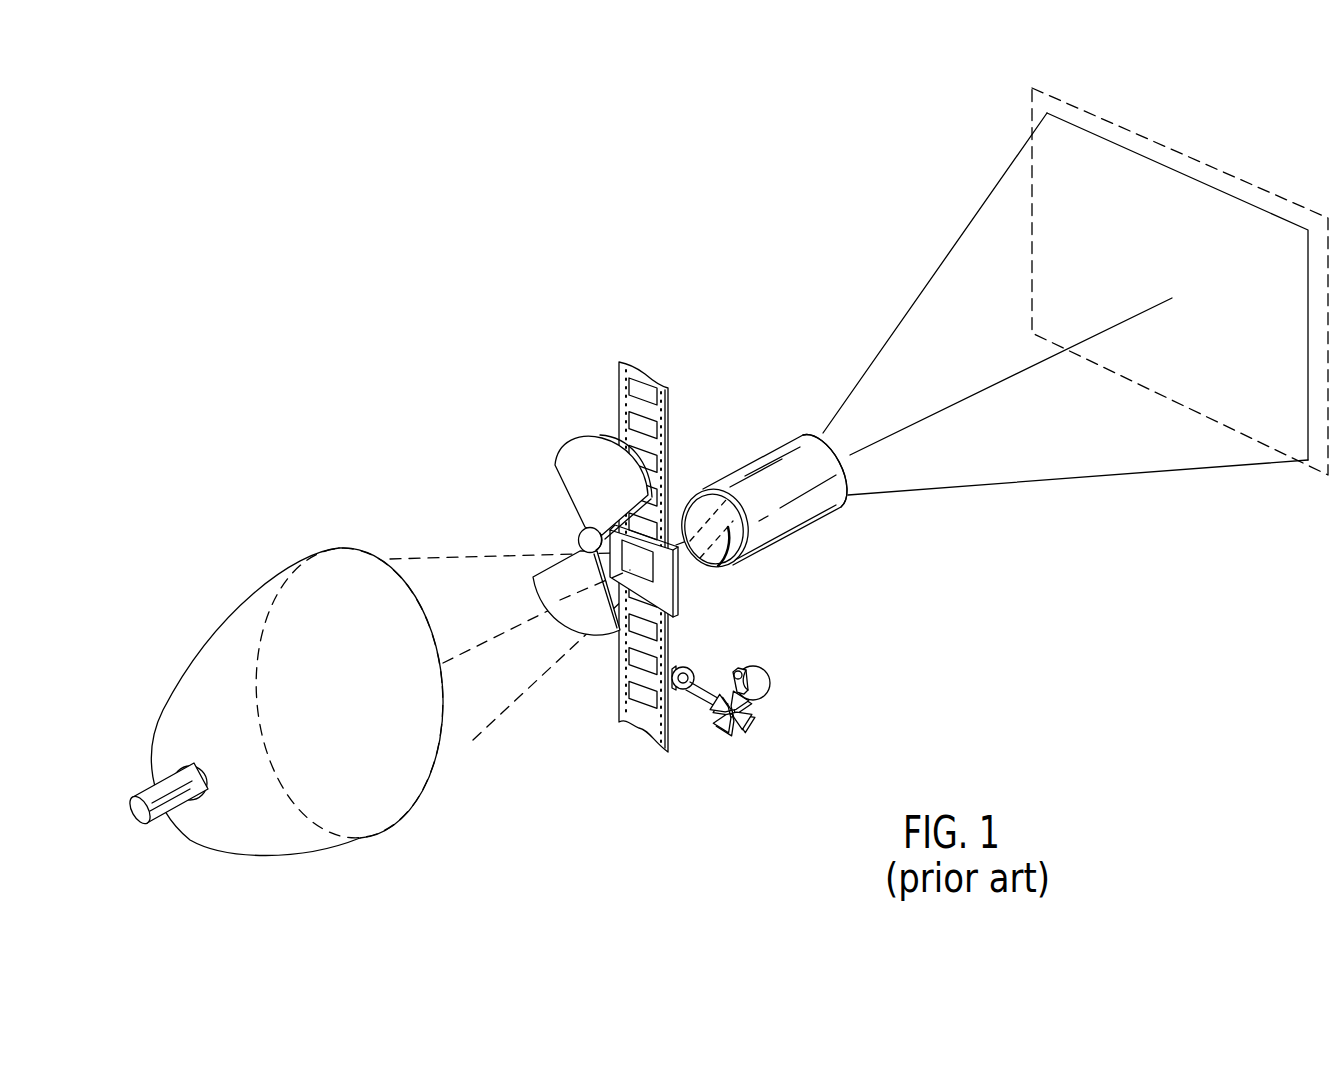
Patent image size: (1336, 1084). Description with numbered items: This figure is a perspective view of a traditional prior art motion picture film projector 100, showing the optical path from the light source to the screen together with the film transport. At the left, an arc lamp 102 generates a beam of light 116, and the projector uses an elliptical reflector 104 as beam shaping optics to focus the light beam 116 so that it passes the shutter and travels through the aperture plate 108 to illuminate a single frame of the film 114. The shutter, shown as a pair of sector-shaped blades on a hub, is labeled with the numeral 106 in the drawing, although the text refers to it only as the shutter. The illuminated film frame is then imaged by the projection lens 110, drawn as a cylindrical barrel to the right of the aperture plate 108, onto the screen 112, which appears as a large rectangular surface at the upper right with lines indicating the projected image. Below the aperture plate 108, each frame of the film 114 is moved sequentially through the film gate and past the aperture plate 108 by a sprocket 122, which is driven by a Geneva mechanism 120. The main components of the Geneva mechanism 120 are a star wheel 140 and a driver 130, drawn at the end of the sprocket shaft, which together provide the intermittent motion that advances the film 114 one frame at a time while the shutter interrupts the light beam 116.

The motion picture film projector 100 is at (402, 352).
The arc lamp 102 is at (156, 828).
The elliptical reflector 104 is at (401, 812).
The shutter 106 is at (568, 566).
The aperture plate 108 is at (680, 609).
The projection lens 110 is at (787, 447).
The screen 112 is at (1197, 160).
The film 114 is at (620, 391).
The beam of light 116 is at (597, 588).
The Geneva mechanism 120 is at (755, 725).
The sprocket 122 is at (682, 664).
The driver 130 is at (770, 680).
The star wheel 140 is at (751, 720).